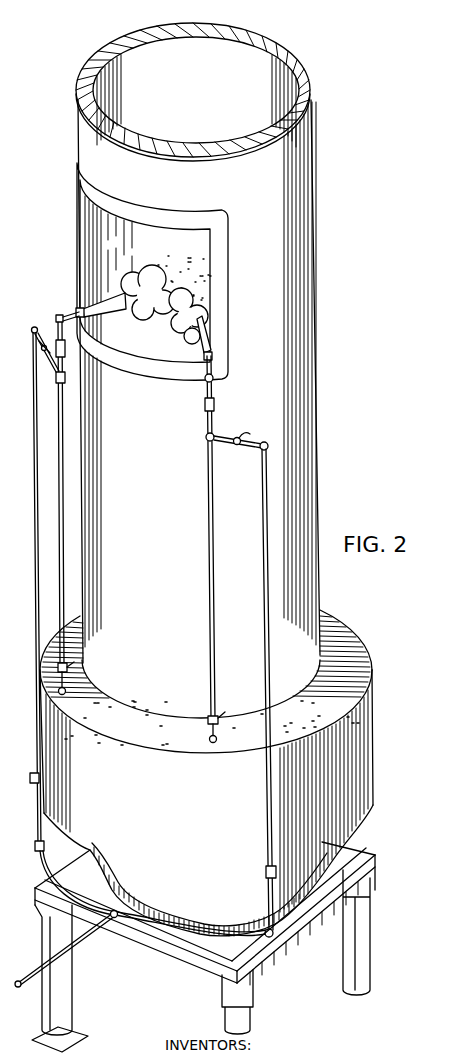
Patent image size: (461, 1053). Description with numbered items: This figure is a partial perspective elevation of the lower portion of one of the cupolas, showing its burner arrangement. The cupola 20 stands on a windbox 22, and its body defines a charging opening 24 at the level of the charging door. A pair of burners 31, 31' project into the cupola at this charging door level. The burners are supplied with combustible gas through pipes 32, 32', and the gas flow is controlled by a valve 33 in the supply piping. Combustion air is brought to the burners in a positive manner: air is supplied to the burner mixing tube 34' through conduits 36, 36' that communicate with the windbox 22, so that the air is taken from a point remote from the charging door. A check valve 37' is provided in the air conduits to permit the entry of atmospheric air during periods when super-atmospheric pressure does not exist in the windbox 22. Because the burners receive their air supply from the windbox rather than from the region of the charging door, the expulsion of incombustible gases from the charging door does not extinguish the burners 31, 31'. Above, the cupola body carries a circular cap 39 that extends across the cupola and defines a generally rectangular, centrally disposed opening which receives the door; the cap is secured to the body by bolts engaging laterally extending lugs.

The cupola 20 is at (306, 141).
The windbox 22 is at (357, 757).
The charging opening 24 is at (201, 251).
The burner 31 is at (86, 299).
The burner 31' is at (232, 342).
The pipe 32 is at (137, 657).
The pipe 32' is at (254, 693).
The valve 33 is at (35, 783).
The burner mixing tube 34' is at (241, 429).
The conduit 36 is at (89, 488).
The conduit 36' is at (229, 537).
The check valve 37' is at (159, 692).
The circular cap 39 is at (66, 368).